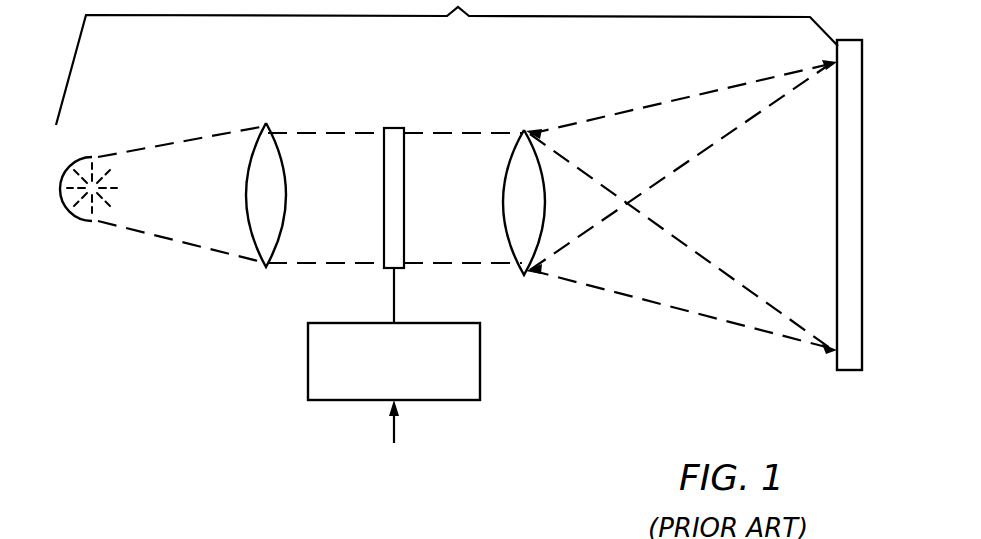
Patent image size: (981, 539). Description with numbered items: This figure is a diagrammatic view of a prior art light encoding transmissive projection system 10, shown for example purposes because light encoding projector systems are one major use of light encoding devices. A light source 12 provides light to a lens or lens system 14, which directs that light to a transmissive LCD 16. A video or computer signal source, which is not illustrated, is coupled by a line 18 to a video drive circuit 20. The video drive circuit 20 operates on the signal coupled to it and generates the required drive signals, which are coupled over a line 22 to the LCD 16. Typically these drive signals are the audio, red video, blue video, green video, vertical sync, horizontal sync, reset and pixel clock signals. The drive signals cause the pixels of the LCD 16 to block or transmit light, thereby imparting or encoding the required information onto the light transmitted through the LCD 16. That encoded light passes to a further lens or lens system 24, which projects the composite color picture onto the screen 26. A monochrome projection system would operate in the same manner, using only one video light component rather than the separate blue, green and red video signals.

The light encoding transmissive projection system 10 is at (424, 80).
The light source 12 is at (104, 183).
The lens or lens system 14 is at (270, 250).
The transmissive LCD 16 is at (400, 128).
The line 18 is at (395, 440).
The video drive circuit 20 is at (482, 362).
The line 22 is at (396, 293).
The lens or lens system 24 is at (505, 196).
The screen 26 is at (836, 184).